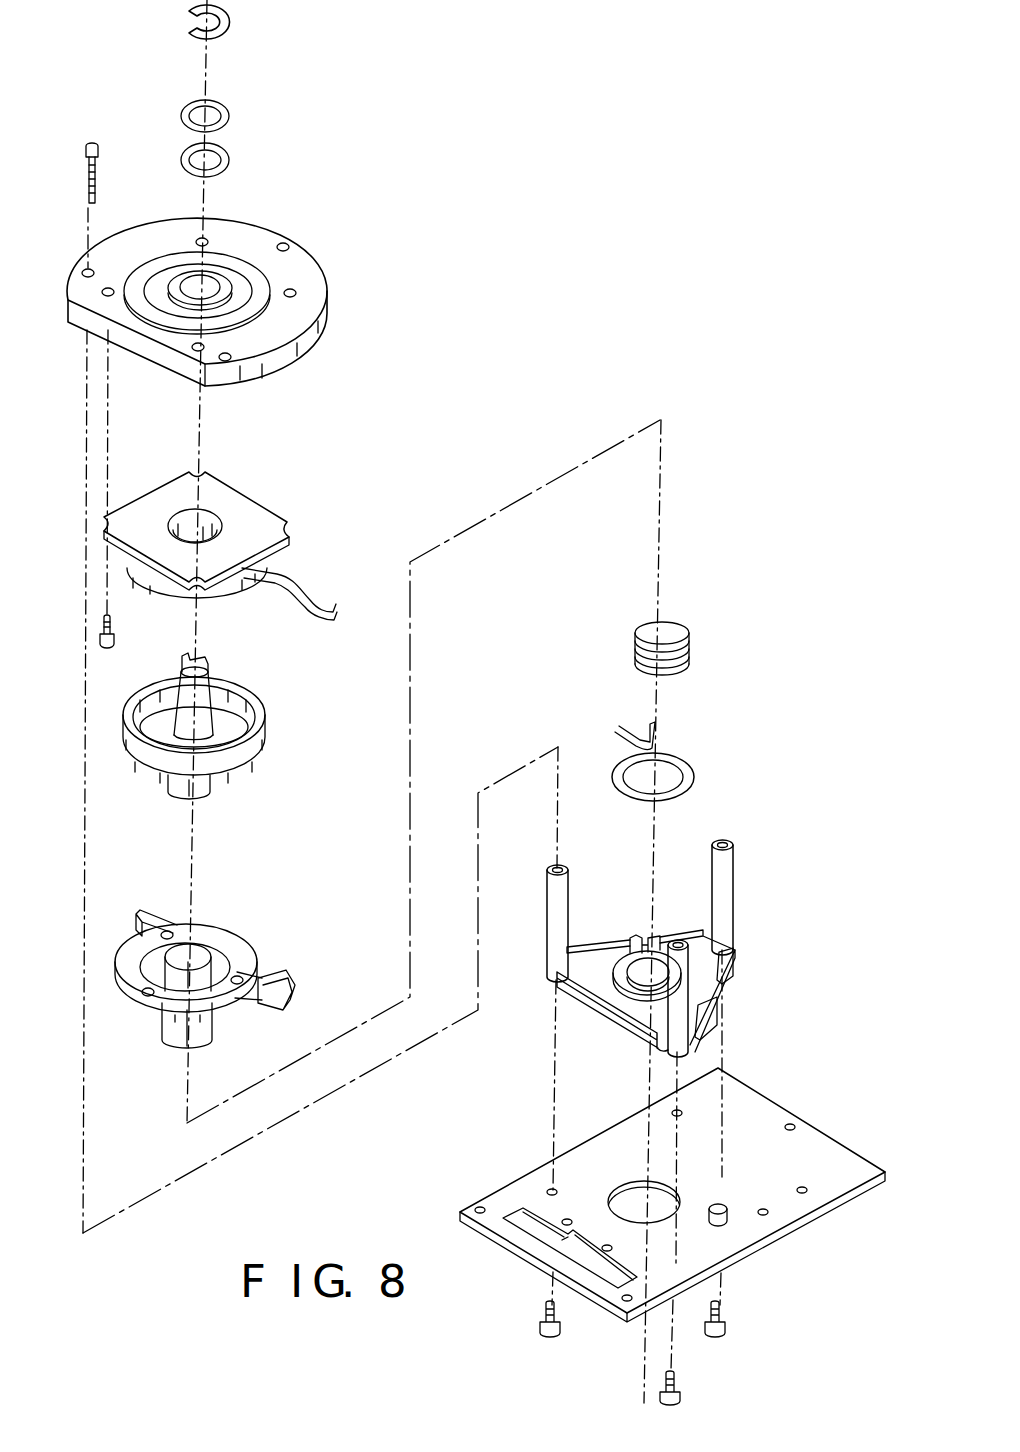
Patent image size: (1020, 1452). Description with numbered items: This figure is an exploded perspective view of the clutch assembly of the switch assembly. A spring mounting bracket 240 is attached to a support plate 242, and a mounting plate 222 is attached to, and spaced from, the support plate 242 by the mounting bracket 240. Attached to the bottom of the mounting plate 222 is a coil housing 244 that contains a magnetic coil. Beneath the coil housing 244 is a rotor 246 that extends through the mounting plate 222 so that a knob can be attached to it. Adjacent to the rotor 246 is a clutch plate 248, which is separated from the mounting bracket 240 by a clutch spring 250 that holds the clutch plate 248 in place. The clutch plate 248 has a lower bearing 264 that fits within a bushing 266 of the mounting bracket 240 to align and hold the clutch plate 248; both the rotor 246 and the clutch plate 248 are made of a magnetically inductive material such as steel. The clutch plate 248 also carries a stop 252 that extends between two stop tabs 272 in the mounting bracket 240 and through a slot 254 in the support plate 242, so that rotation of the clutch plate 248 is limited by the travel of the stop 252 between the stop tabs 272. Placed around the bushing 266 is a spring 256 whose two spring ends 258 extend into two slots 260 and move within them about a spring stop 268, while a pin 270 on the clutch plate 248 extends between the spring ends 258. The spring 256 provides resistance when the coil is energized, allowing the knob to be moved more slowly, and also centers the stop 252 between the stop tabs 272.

The mounting plate 222 is at (313, 272).
The coil housing 244 is at (260, 510).
The rotor 246 is at (247, 748).
The clutch plate 248 is at (217, 935).
The pin 270 is at (160, 910).
The stop 252 is at (293, 982).
The lower bearing 264 is at (177, 1037).
The clutch spring 250 is at (690, 649).
The spring ends 258 is at (630, 733).
The spring 256 is at (688, 767).
The spring mounting bracket 240 is at (723, 892).
The spring stop 268 is at (672, 935).
The slots 260 is at (643, 938).
The stop tabs 272 is at (717, 1010).
The bushing 266 is at (627, 987).
The support plate 242 is at (760, 1113).
The slot 254 is at (722, 1222).